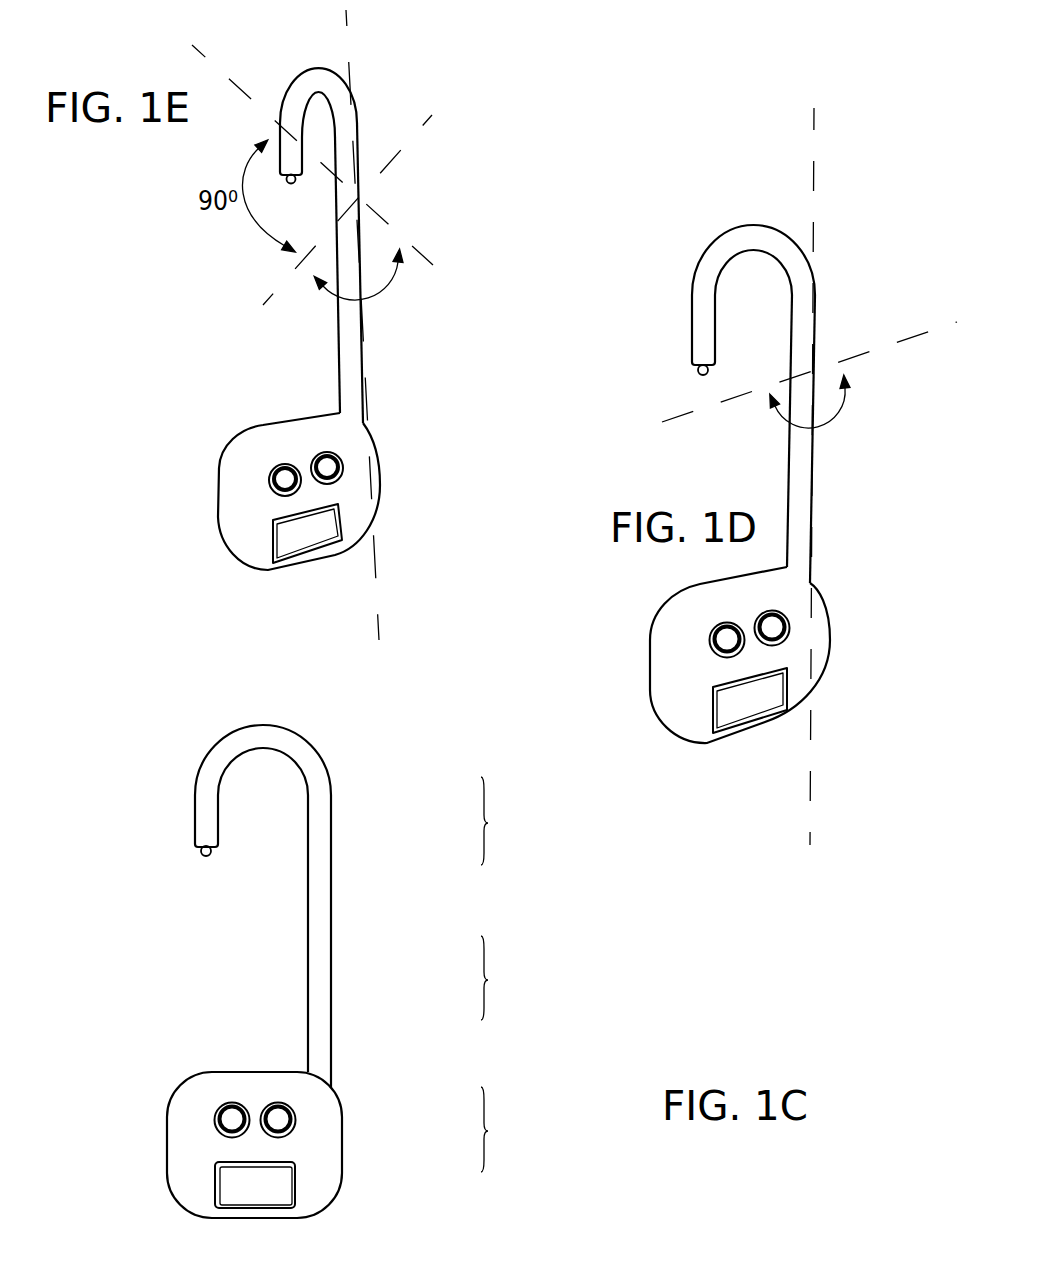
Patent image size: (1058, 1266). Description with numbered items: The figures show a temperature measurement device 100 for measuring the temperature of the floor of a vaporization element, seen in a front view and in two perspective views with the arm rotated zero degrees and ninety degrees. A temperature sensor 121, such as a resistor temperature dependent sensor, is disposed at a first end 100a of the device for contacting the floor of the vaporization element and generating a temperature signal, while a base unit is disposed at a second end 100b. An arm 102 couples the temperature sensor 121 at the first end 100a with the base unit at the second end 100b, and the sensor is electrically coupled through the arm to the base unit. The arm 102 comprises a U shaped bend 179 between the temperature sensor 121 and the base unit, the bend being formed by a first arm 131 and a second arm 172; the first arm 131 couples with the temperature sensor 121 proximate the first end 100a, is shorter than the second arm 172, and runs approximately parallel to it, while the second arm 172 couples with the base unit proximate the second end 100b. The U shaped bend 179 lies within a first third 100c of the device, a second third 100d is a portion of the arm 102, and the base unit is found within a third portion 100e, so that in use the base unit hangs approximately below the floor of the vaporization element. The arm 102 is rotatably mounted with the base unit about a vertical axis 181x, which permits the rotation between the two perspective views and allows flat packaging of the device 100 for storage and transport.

In FIG. 1C, the temperature measurement device 100 is at (376, 1058).
In FIG. 1D, the temperature measurement device 100 is at (876, 305).
In FIG. 1E, the temperature measurement device 100 is at (443, 199).
In FIG. 1C, the first end 100a is at (212, 836).
In FIG. 1C, the second end 100b is at (292, 1220).
In FIG. 1C, the first third 100c is at (495, 835).
In FIG. 1C, the second third 100d is at (495, 972).
In FIG. 1C, the third portion 100e is at (495, 1125).
In FIG. 1C, the arm 102 is at (318, 979).
In FIG. 1C, the temperature sensor 121 is at (205, 852).
In FIG. 1D, the temperature sensor 121 is at (706, 374).
In FIG. 1E, the temperature sensor 121 is at (292, 177).
In FIG. 1C, the first arm 131 is at (213, 765).
In FIG. 1C, the second arm 172 is at (323, 858).
In FIG. 1C, the U shaped bend 179 is at (306, 824).
In FIG. 1D, the U shaped bend 179 is at (641, 308).
In FIG. 1D, the vertical axis 181x is at (785, 566).
In FIG. 1E, the vertical axis 181x is at (368, 565).